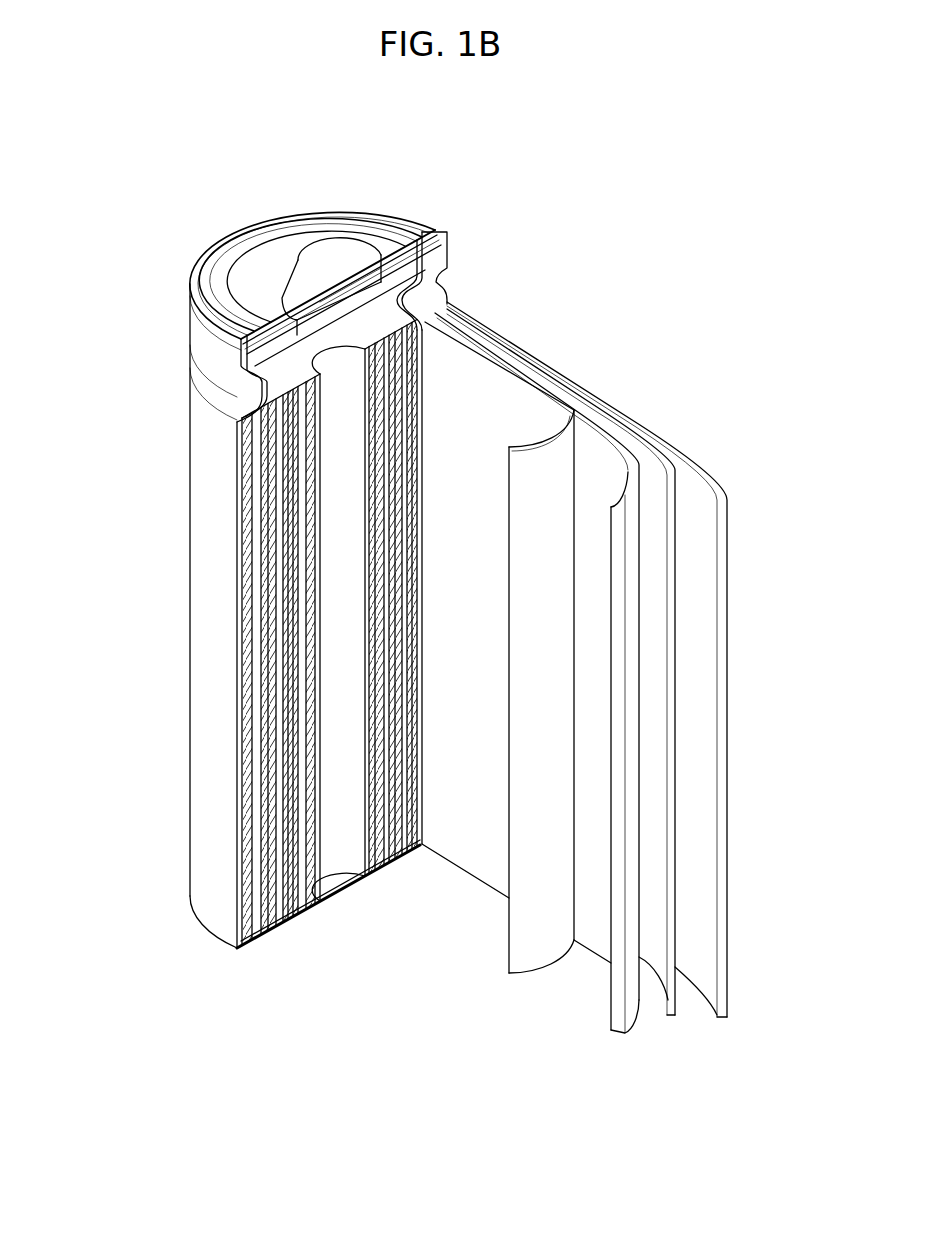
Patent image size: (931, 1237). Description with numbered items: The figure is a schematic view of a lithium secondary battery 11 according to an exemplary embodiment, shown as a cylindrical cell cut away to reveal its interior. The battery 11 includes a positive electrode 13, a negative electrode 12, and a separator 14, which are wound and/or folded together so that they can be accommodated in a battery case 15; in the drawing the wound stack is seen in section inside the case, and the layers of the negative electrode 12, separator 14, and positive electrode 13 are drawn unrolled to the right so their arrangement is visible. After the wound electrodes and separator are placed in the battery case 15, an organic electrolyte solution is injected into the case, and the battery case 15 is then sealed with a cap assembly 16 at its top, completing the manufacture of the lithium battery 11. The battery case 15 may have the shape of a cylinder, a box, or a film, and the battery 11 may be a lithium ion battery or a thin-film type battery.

The lithium secondary battery 11 is at (606, 240).
The negative electrode 12 is at (713, 472).
The positive electrode 13 is at (600, 422).
The separator 14 is at (513, 368).
The battery case 15 is at (203, 622).
The cap assembly 16 is at (318, 248).